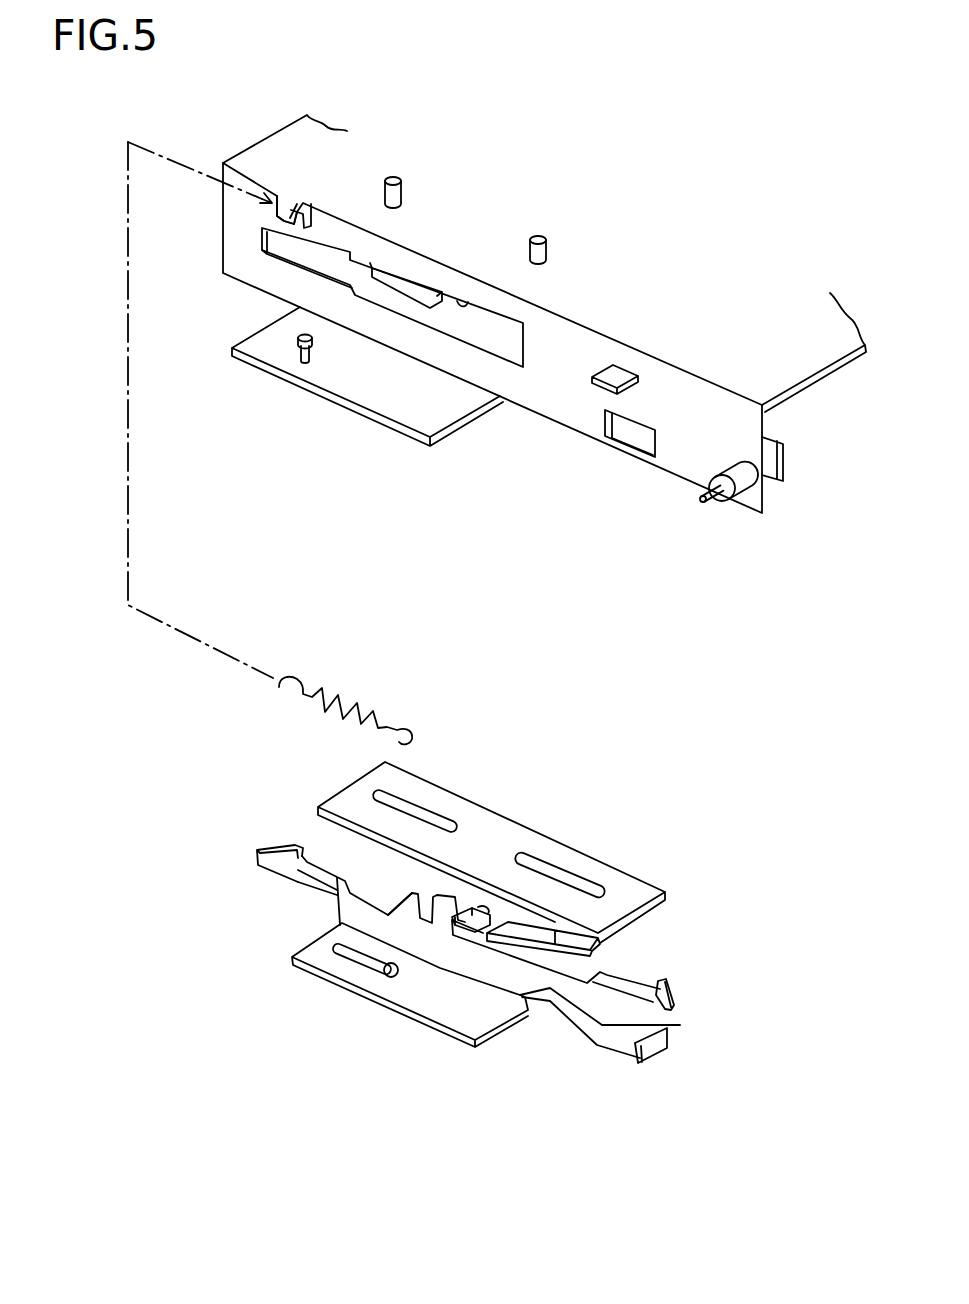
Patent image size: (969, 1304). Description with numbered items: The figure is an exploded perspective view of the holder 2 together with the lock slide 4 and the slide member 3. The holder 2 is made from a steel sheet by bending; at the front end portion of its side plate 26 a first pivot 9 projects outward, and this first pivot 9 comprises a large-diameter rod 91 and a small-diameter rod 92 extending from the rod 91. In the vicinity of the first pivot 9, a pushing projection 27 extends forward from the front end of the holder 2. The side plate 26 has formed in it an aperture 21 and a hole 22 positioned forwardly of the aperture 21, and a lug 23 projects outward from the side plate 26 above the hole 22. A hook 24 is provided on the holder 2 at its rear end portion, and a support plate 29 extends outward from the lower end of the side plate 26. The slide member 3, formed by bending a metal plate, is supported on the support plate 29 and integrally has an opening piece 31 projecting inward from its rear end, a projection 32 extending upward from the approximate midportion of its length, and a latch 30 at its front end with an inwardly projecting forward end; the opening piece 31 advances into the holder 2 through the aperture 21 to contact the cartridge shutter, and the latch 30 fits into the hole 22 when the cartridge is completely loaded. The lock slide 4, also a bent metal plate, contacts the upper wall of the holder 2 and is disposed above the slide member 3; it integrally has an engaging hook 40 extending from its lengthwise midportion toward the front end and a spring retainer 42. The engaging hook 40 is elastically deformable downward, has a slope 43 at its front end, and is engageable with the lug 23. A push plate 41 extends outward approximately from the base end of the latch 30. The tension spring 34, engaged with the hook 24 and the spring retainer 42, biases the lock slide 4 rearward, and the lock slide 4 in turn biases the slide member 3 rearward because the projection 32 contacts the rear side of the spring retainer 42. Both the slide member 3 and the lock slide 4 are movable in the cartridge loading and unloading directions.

The holder 2 is at (790, 357).
The aperture 21 is at (470, 305).
The hole 22 is at (640, 440).
The lug 23 is at (617, 375).
The hook 24 is at (300, 200).
The side plate 26 is at (700, 395).
The pushing projection 27 is at (783, 483).
The support plate 29 is at (445, 402).
The first pivot 9 is at (725, 554).
The large-diameter rod 91 is at (748, 503).
The small-diameter rod 92 is at (713, 500).
The tension spring 34 is at (302, 688).
The slide member 3 is at (469, 927).
The latch 30 is at (678, 1025).
The opening piece 31 is at (475, 897).
The projection 32 is at (405, 897).
The lock slide 4 is at (627, 885).
The engaging hook 40 is at (640, 978).
The push plate 41 is at (527, 932).
The spring retainer 42 is at (478, 907).
The slope 43 is at (673, 988).